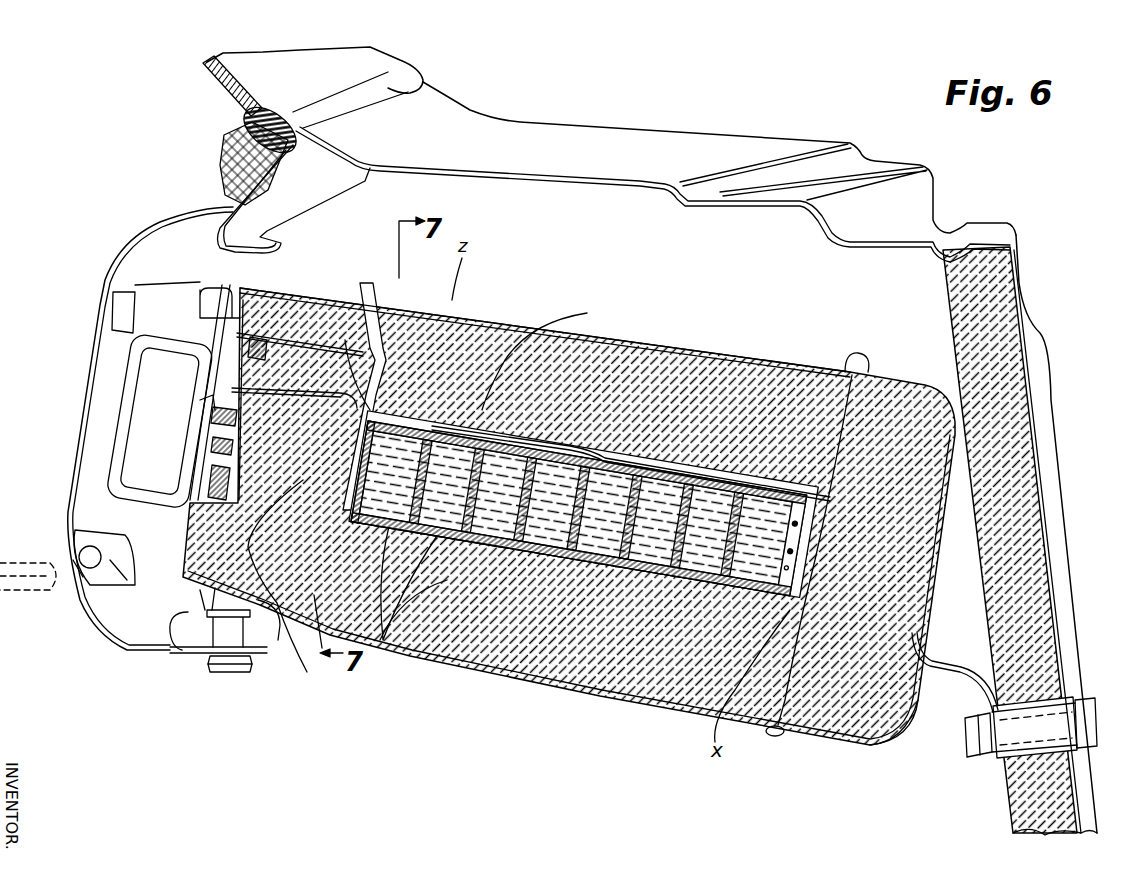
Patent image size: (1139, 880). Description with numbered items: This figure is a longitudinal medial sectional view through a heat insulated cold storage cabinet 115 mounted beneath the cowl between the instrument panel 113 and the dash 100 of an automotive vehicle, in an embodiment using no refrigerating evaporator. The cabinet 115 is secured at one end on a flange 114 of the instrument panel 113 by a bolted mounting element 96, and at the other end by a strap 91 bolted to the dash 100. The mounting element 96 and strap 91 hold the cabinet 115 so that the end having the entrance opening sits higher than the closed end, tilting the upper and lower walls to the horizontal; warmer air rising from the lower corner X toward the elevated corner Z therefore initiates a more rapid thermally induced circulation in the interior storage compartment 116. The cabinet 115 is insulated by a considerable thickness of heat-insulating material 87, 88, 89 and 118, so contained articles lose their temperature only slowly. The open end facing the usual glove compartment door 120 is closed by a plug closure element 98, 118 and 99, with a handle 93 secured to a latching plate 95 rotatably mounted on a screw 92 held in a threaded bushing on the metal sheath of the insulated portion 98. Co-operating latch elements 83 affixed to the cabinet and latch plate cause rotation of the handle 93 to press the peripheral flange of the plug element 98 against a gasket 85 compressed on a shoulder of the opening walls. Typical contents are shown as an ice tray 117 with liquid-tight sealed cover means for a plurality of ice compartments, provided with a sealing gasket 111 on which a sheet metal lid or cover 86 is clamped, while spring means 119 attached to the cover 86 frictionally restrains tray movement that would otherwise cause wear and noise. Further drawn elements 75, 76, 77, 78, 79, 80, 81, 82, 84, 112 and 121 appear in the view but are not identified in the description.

The pivot pin 75 is at (102, 562).
The lever 76 is at (113, 575).
The knob 77 is at (83, 570).
The cushion layer 78 is at (423, 410).
The cushion layer 79 is at (413, 407).
The cushion layer 80 is at (366, 300).
The bottom sheet 81 is at (850, 738).
The seat cushion body 82 is at (553, 680).
The latch elements 83 is at (203, 323).
The latch strip 84 is at (187, 520).
The gasket 85 is at (277, 613).
The sheet metal lid or cover 86 is at (773, 382).
The heat-insulating material 87 is at (613, 450).
The heat-insulating material 88 is at (303, 297).
The heat-insulating material 89 is at (923, 540).
The strap 91 is at (921, 668).
The screw 92 is at (197, 407).
The handle 93 is at (127, 408).
The latching plate 95 is at (213, 370).
The bolted mounting element 96 is at (220, 637).
The plug closure element 98 is at (207, 462).
The plug closure element 99 is at (200, 487).
The dash 100 is at (1007, 418).
The sealing gasket 111 is at (575, 322).
The top panel sheet 112 is at (560, 183).
The instrument panel 113 is at (290, 207).
The flange 114 is at (173, 653).
The cabinet 115 is at (625, 692).
The interior storage compartment 116 is at (447, 420).
The ice tray 117 is at (717, 475).
The heat-insulating material 118 is at (300, 543).
The spring means 119 is at (653, 470).
The glove compartment door 120 is at (85, 379).
The cushion section 121 is at (383, 640).